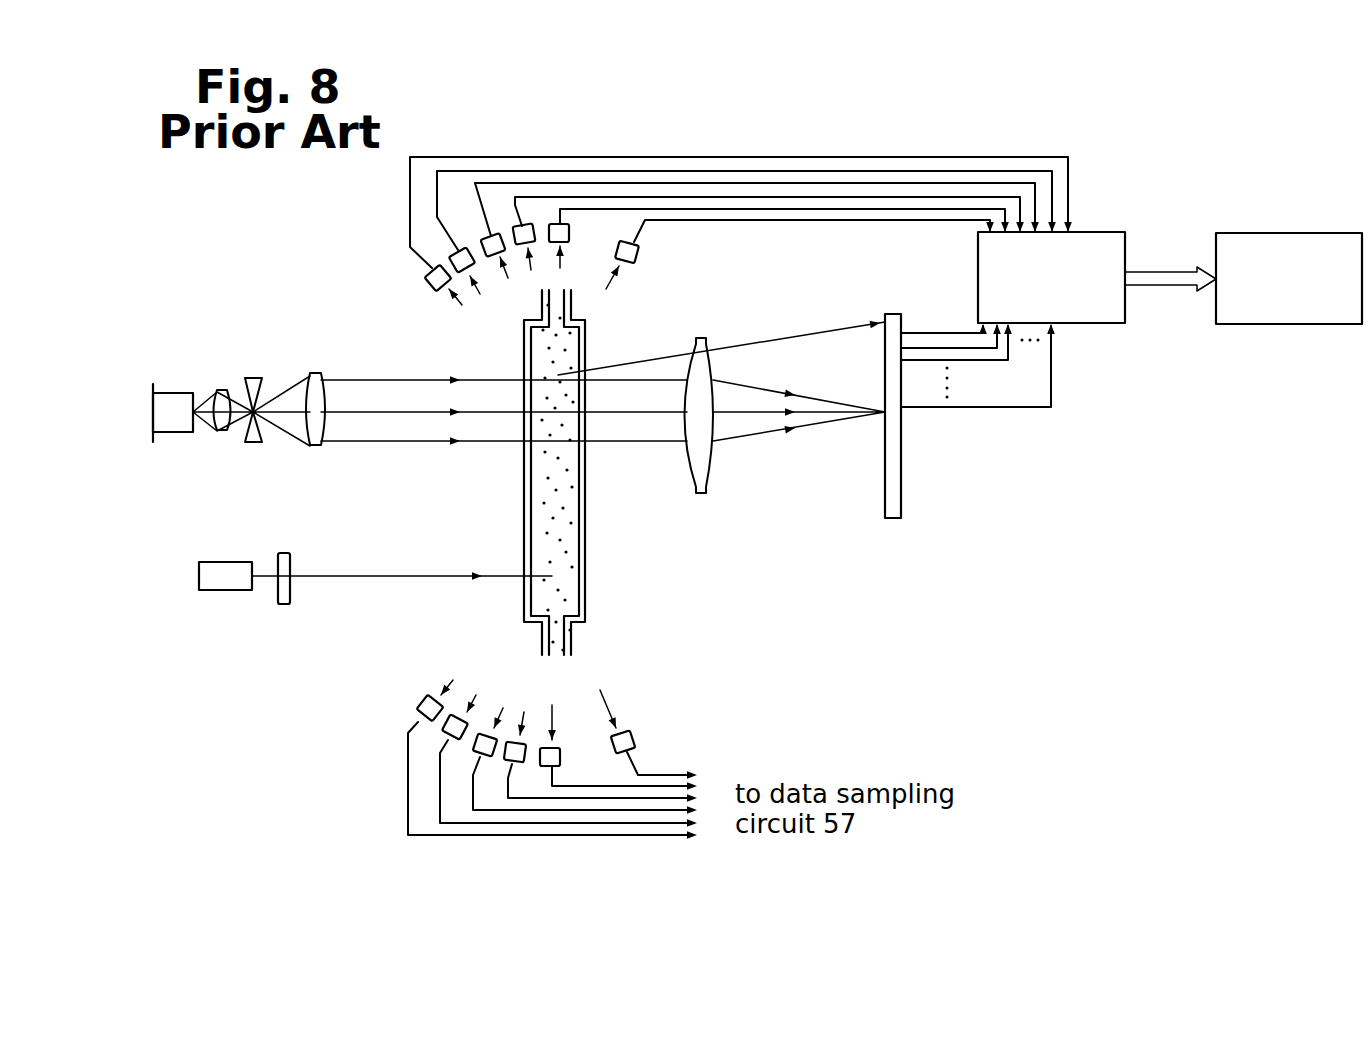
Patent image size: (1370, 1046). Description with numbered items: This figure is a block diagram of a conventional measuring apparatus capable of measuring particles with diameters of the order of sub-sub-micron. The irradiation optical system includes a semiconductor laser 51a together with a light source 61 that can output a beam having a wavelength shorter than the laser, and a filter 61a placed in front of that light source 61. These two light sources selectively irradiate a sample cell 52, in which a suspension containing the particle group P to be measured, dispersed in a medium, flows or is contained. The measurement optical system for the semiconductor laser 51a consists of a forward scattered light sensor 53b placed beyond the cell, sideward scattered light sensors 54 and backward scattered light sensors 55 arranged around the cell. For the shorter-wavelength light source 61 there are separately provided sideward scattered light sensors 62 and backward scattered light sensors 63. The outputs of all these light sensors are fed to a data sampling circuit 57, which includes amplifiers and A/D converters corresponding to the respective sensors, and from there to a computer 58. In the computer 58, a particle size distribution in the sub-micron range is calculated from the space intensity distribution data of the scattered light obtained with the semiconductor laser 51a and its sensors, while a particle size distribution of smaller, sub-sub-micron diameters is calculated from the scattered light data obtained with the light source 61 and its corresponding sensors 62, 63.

The semiconductor laser 51a is at (176, 393).
The sample cell 52 is at (525, 522).
The particle group P is at (556, 520).
The forward scattered light sensor 53b is at (901, 510).
The sideward scattered light sensors 54 is at (570, 232).
The backward scattered light sensors 55 is at (532, 226).
The data sampling circuit 57 is at (1112, 240).
The computer 58 is at (1312, 243).
The light source 61 is at (223, 592).
The filter 61a is at (284, 606).
The sideward scattered light sensors 62 is at (558, 763).
The backward scattered light sensors 63 is at (447, 735).